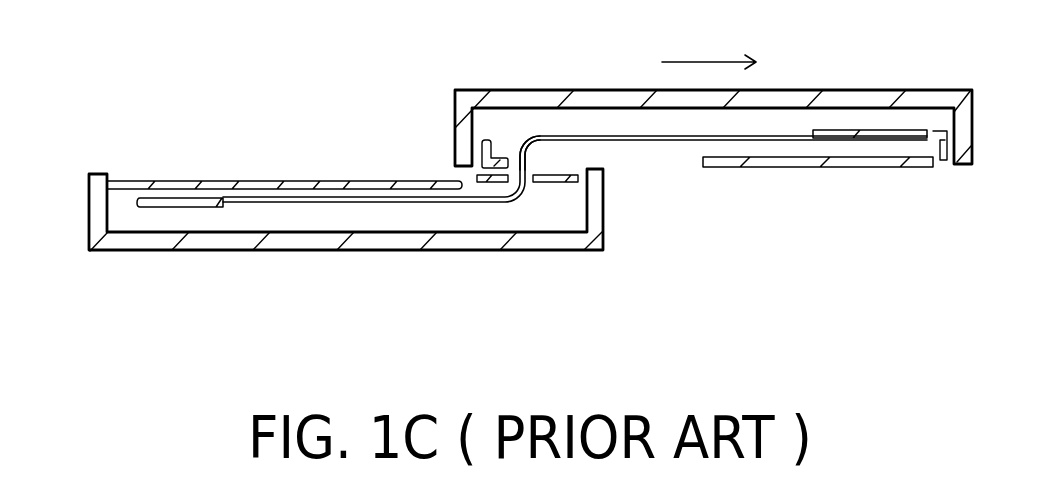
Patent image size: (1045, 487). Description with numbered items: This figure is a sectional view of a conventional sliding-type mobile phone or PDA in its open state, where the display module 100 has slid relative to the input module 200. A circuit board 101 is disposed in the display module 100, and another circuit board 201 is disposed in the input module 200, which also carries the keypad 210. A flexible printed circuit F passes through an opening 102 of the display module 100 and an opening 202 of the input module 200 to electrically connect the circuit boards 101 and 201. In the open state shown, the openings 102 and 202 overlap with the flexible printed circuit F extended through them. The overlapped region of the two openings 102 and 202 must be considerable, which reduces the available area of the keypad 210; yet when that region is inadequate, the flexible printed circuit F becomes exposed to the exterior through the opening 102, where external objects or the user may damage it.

The display module 100 is at (489, 51).
The circuit board 101 is at (868, 130).
The opening 102 is at (650, 153).
The input module 200 is at (585, 281).
The circuit board 201 is at (180, 207).
The opening 202 is at (525, 176).
The keypad 210 is at (298, 183).
The flexible printed circuit F is at (519, 150).